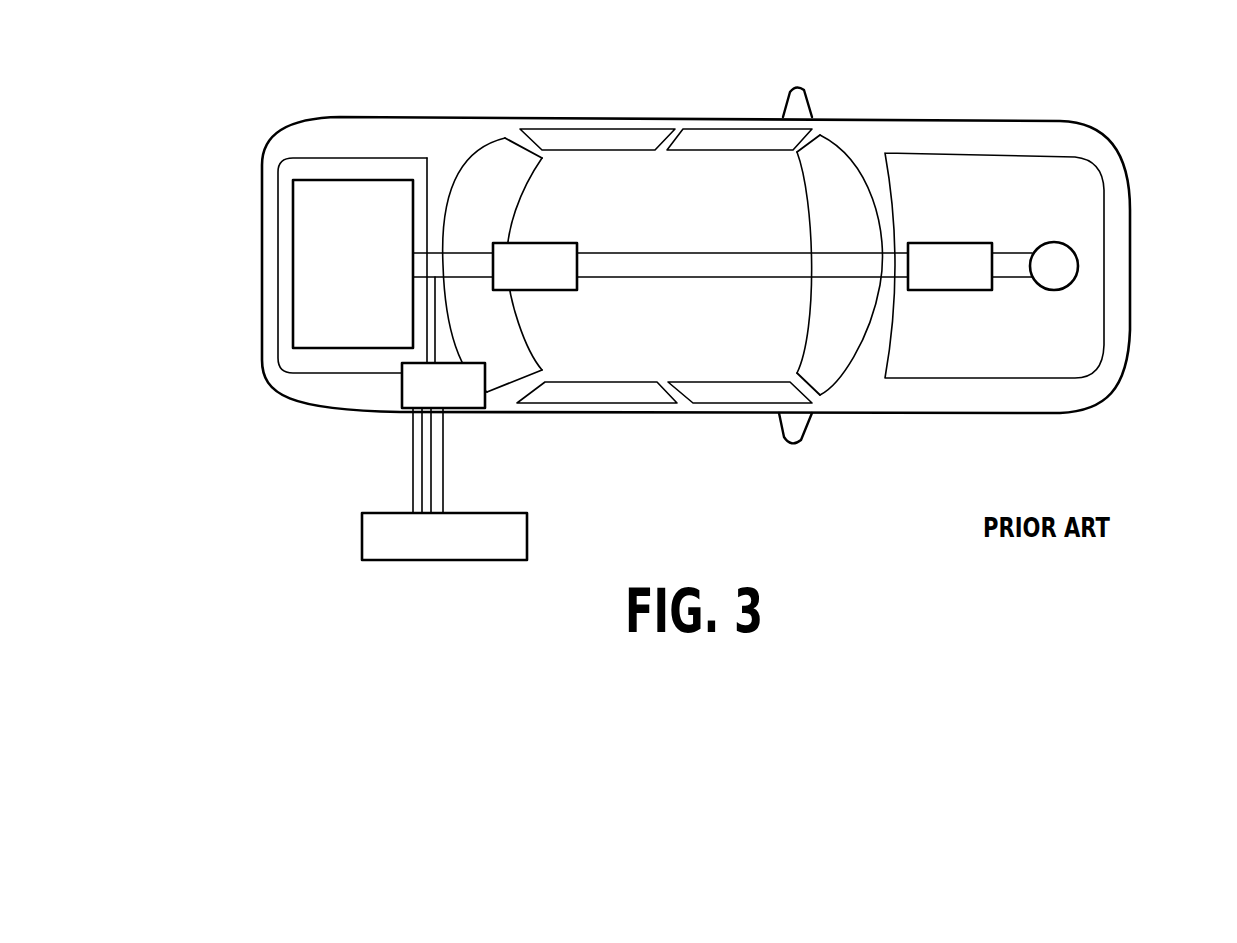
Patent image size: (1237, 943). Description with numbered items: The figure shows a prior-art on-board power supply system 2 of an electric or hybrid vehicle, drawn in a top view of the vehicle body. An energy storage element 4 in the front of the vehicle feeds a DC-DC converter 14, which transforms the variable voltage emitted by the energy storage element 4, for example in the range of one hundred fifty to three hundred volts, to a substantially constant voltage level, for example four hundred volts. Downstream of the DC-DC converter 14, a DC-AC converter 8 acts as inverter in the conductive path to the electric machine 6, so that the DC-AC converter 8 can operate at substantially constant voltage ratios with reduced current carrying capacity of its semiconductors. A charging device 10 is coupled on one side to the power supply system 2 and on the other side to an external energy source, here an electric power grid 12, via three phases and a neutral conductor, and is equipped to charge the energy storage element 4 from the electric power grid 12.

The power supply system 2 is at (1145, 160).
The energy storage element 4 is at (308, 263).
The electric machine 6 is at (1063, 253).
The DC-AC converter 8 is at (940, 290).
The charging device 10 is at (455, 393).
The electric power grid 12 is at (375, 535).
The DC-DC converter 14 is at (547, 290).